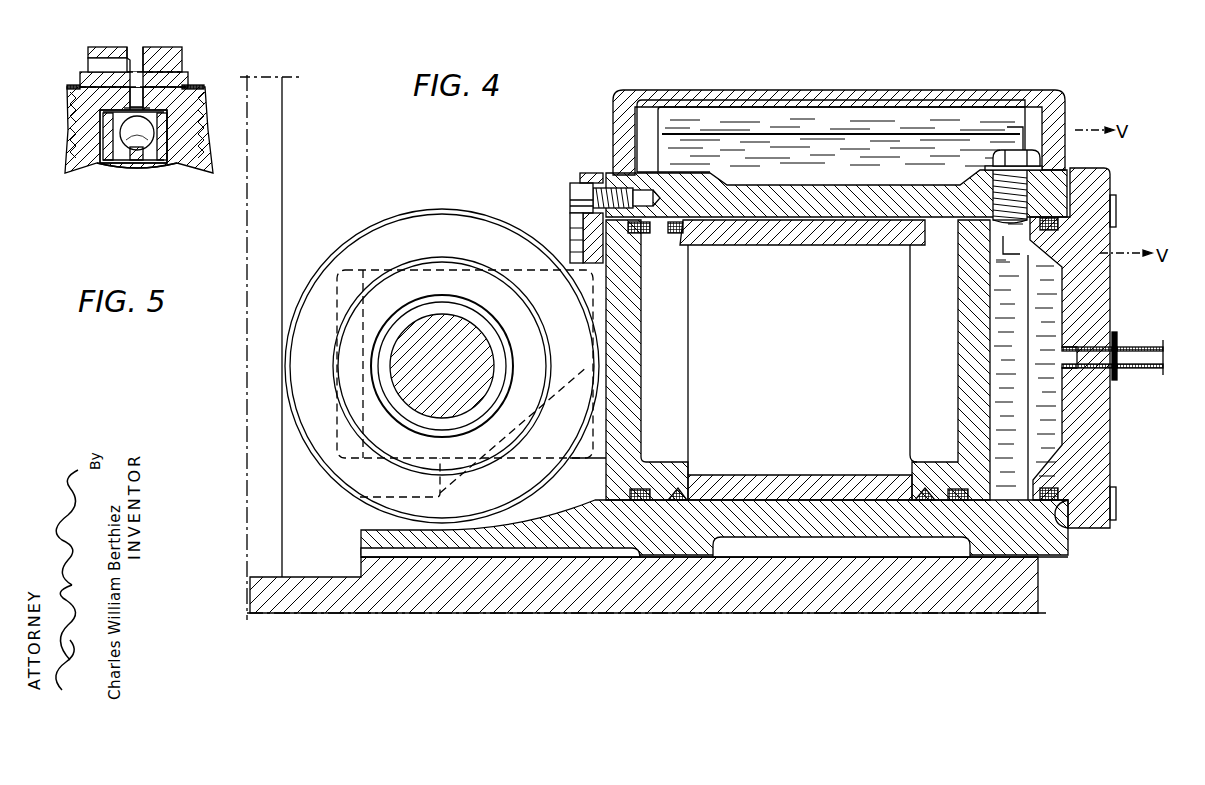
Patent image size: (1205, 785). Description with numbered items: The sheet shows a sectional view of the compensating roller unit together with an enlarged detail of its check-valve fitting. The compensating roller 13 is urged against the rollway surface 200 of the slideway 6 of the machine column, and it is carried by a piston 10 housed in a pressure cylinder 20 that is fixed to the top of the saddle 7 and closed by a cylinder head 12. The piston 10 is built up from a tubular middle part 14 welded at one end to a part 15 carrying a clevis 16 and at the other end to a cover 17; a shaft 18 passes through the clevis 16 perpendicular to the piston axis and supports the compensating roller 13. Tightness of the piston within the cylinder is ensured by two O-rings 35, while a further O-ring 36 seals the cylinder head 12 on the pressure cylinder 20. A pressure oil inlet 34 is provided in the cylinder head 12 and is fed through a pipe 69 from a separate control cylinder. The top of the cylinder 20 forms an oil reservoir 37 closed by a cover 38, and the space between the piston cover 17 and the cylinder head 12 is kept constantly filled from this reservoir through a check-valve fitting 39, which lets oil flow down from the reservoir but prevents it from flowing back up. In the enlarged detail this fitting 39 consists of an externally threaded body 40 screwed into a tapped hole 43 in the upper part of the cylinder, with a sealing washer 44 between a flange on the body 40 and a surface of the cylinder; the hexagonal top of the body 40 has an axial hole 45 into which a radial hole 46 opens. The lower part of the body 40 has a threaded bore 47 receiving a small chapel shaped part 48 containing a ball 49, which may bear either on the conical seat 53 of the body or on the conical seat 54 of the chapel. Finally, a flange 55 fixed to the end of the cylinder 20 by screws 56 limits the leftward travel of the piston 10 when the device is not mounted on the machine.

In FIG. 4, the slideway 6 is at (268, 172).
In FIG. 4, the rollway surface 200 is at (284, 193).
In FIG. 4, the saddle 7 is at (885, 605).
In FIG. 4, the pressure cylinder 20 is at (820, 523).
In FIG. 5, the pressure cylinder 20 is at (83, 166).
In FIG. 4, the compensating roller 13 is at (387, 230).
In FIG. 4, the shaft 18 is at (430, 385).
In FIG. 4, the clevis 16 is at (583, 452).
In FIG. 4, the part carrying clevis 15 is at (632, 356).
In FIG. 4, the cover 17 is at (962, 350).
In FIG. 4, the tubular middle part 14 is at (787, 478).
In FIG. 4, the piston 10 is at (804, 407).
In FIG. 4, the cover 38 is at (855, 92).
In FIG. 4, the oil reservoir 37 is at (965, 112).
In FIG. 4, the valve bolt 39 is at (995, 152).
In FIG. 5, the valve bolt 39 is at (105, 45).
In FIG. 4, the cylinder head 12 is at (1105, 443).
In FIG. 4, the O-ring 36 is at (1070, 522).
In FIG. 4, the pressure oil inlet 34 is at (1072, 345).
In FIG. 4, the pipe 69 is at (1135, 358).
In FIG. 4, the screws 56 is at (568, 195).
In FIG. 4, the flange 55 is at (578, 246).
In FIG. 4, the O-rings 35 is at (665, 490).
In FIG. 5, the externally threaded body 40 is at (78, 95).
In FIG. 5, the sealing washer 44 is at (80, 80).
In FIG. 5, the tapped hole 43 is at (200, 86).
In FIG. 5, the radial hole 46 is at (95, 63).
In FIG. 5, the axial hole 45 is at (140, 52).
In FIG. 5, the conical seat 53 is at (110, 113).
In FIG. 5, the conical seat 54 is at (112, 132).
In FIG. 5, the threaded bore 47 is at (108, 160).
In FIG. 5, the chapel shaped part 48 is at (165, 160).
In FIG. 5, the ball 49 is at (143, 157).